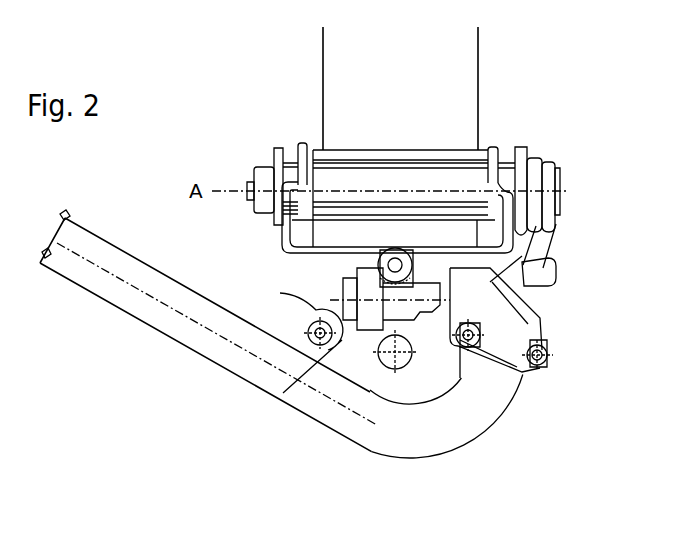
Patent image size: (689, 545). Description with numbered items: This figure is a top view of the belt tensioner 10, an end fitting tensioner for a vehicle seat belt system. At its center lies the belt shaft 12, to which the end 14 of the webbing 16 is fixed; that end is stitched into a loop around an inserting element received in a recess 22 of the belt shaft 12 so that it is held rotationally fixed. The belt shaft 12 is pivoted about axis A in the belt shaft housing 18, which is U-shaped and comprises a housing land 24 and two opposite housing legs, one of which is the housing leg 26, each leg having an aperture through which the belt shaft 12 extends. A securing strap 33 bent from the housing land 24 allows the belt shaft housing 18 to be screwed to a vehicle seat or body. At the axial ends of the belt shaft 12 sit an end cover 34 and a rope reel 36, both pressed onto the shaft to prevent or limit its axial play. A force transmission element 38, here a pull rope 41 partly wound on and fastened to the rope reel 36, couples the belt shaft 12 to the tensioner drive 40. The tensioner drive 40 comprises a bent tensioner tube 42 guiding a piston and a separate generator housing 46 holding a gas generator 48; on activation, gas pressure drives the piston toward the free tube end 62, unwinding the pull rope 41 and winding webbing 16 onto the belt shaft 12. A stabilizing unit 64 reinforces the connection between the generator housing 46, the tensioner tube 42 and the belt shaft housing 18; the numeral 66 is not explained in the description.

The belt tensioner 10 is at (160, 410).
The belt shaft 12 is at (576, 171).
The end of the webbing 14 is at (312, 142).
The webbing 16 is at (447, 78).
The belt shaft housing 18 is at (527, 266).
The recess 22 is at (482, 149).
The housing land 24 is at (332, 260).
The housing leg 26 is at (283, 218).
The securing strap 33 is at (407, 380).
The end cover 34 is at (258, 168).
The rope reel 36 is at (562, 177).
The force transmission element 38 is at (568, 253).
The pull rope 41 is at (515, 258).
The tensioner drive 40 is at (424, 398).
The tensioner tube 42 is at (193, 308).
The generator housing 46 is at (372, 322).
The gas generator 48 is at (343, 312).
The free tube end 62 is at (46, 226).
The stabilizing unit 64 is at (544, 320).
The plate 66 is at (512, 330).